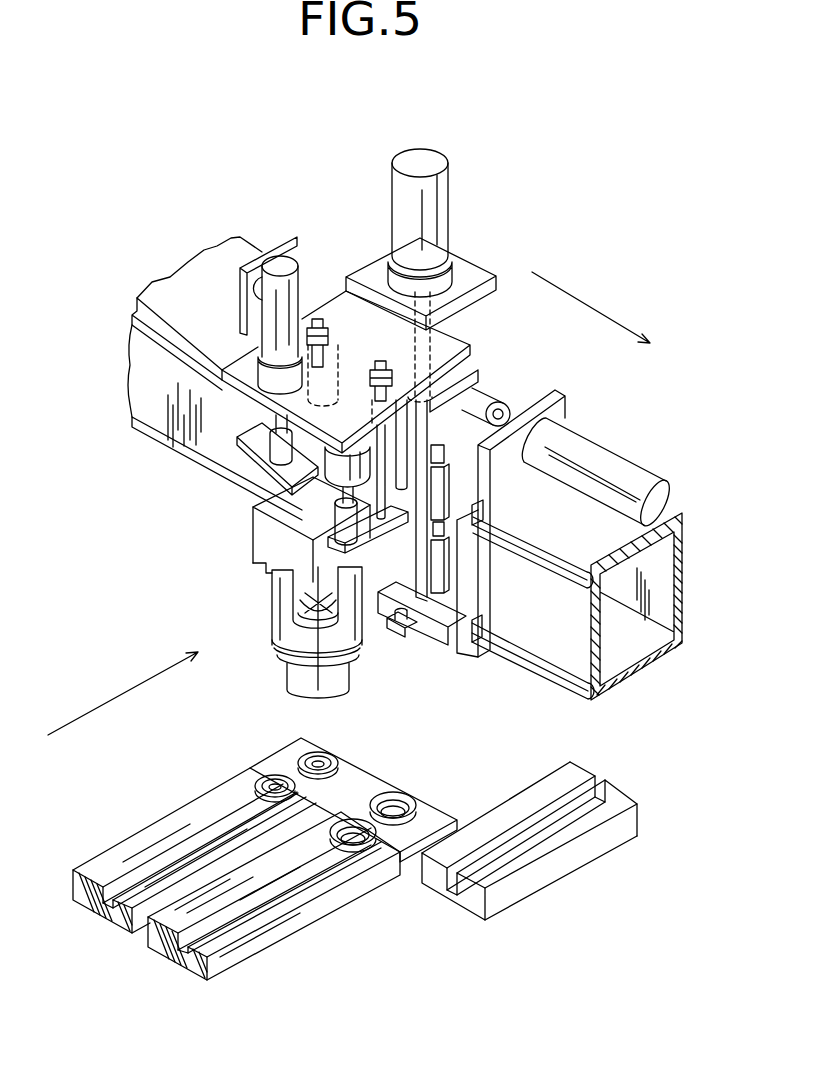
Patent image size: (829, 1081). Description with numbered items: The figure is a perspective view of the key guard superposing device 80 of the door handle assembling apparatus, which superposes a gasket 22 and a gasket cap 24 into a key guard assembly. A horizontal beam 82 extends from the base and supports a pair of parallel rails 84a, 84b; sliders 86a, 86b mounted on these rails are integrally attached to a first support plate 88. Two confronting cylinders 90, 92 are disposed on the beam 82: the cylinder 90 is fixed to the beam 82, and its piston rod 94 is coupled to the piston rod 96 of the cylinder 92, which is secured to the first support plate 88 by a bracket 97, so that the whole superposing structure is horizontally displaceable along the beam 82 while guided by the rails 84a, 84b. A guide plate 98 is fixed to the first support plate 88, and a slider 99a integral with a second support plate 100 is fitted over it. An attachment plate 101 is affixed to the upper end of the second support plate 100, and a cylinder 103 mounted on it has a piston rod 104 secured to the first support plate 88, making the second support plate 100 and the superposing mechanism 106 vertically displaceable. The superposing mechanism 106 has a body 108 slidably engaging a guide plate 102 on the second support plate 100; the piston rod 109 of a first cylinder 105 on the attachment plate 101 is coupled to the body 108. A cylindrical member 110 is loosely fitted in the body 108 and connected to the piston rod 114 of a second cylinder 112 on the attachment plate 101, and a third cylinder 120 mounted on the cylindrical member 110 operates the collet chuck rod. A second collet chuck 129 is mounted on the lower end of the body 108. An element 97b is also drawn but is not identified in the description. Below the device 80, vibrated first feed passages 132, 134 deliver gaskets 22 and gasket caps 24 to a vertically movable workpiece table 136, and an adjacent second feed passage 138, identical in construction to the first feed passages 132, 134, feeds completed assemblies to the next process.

The key guard superposing device 80 is at (563, 190).
The cylinder 90 is at (233, 260).
The piston rod 114 is at (268, 419).
The second cylinder 112 is at (270, 313).
The attachment plate 101 is at (340, 315).
The cylinder 103 is at (437, 215).
The piston rod 104 is at (441, 312).
The piston rod 94 is at (466, 357).
The third cylinder 120 is at (349, 360).
The guide plate 102 is at (400, 437).
The cylindrical member 110 is at (330, 522).
The first cylinder 105 is at (253, 508).
The piston rod 109 is at (311, 543).
The body 108 is at (266, 572).
The superposing mechanism 106 is at (214, 549).
The second collet chuck 129 is at (280, 640).
The slider 99a is at (441, 495).
The slide block 97b is at (442, 570).
The guide plate 98 is at (433, 624).
The first support plate 88 is at (464, 602).
The bracket 97 is at (560, 396).
The second support plate 100 is at (468, 384).
The piston rod 96 is at (503, 404).
The cylinder 92 is at (605, 462).
The horizontal beam 82 is at (682, 513).
The rail 84a is at (558, 584).
The rail 84b is at (550, 675).
The slider 86a is at (483, 513).
The slider 86b is at (474, 642).
The first feed passage 132 is at (153, 820).
The first feed passage 134 is at (375, 872).
The workpiece table 136 is at (355, 780).
The gasket cap 24 is at (326, 752).
The gasket 22 is at (405, 800).
The second feed passage 138 is at (565, 862).